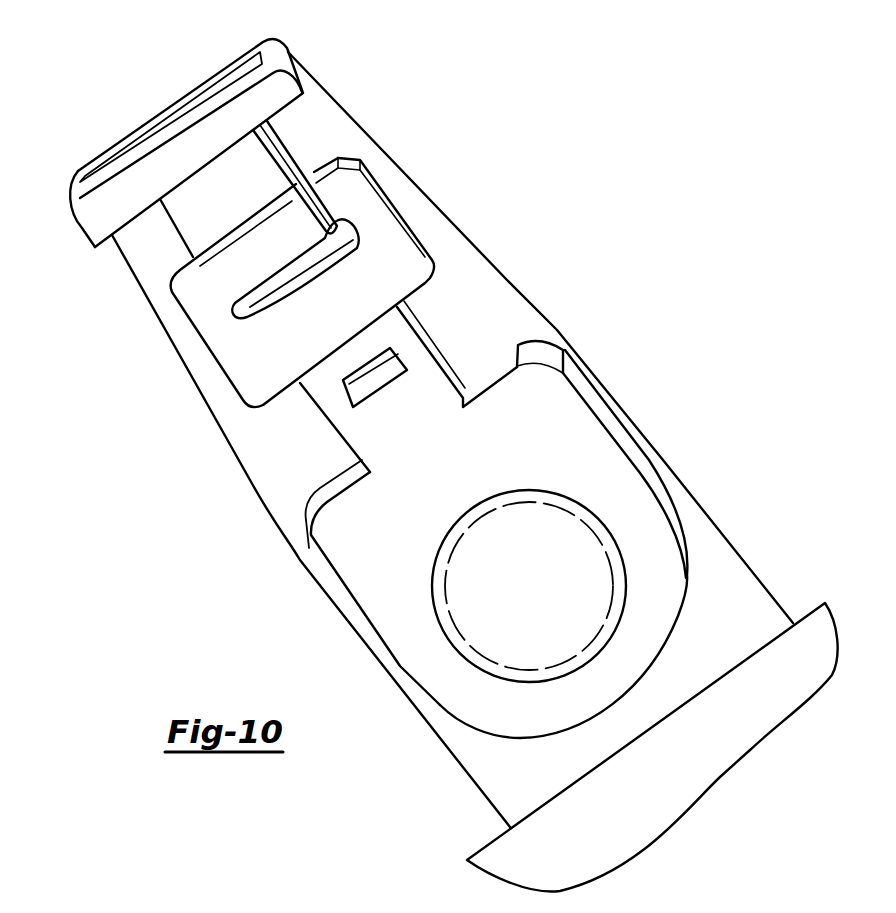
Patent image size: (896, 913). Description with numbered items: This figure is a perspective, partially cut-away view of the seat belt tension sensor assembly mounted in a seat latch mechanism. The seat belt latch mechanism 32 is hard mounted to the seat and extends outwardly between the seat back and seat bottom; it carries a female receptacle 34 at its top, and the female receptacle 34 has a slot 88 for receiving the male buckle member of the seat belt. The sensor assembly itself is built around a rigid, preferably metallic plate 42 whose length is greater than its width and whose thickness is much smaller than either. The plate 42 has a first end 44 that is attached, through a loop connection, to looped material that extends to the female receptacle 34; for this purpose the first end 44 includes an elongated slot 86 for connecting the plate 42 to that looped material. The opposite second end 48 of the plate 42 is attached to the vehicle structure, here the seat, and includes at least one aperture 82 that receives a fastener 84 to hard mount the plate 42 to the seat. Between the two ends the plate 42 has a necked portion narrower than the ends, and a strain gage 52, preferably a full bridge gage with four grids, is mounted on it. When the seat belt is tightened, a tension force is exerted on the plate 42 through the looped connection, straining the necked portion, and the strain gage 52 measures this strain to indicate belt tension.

The seat belt latch mechanism 32 is at (257, 493).
The female receptacle 34 is at (250, 99).
The slot 88 is at (103, 170).
The first end 44 is at (182, 300).
The elongated slot 86 is at (297, 282).
The strain gage 52 is at (372, 384).
The metallic plate 42 is at (380, 600).
The second end 48 is at (541, 720).
The fastener 84 is at (523, 490).
The aperture 82 is at (545, 506).